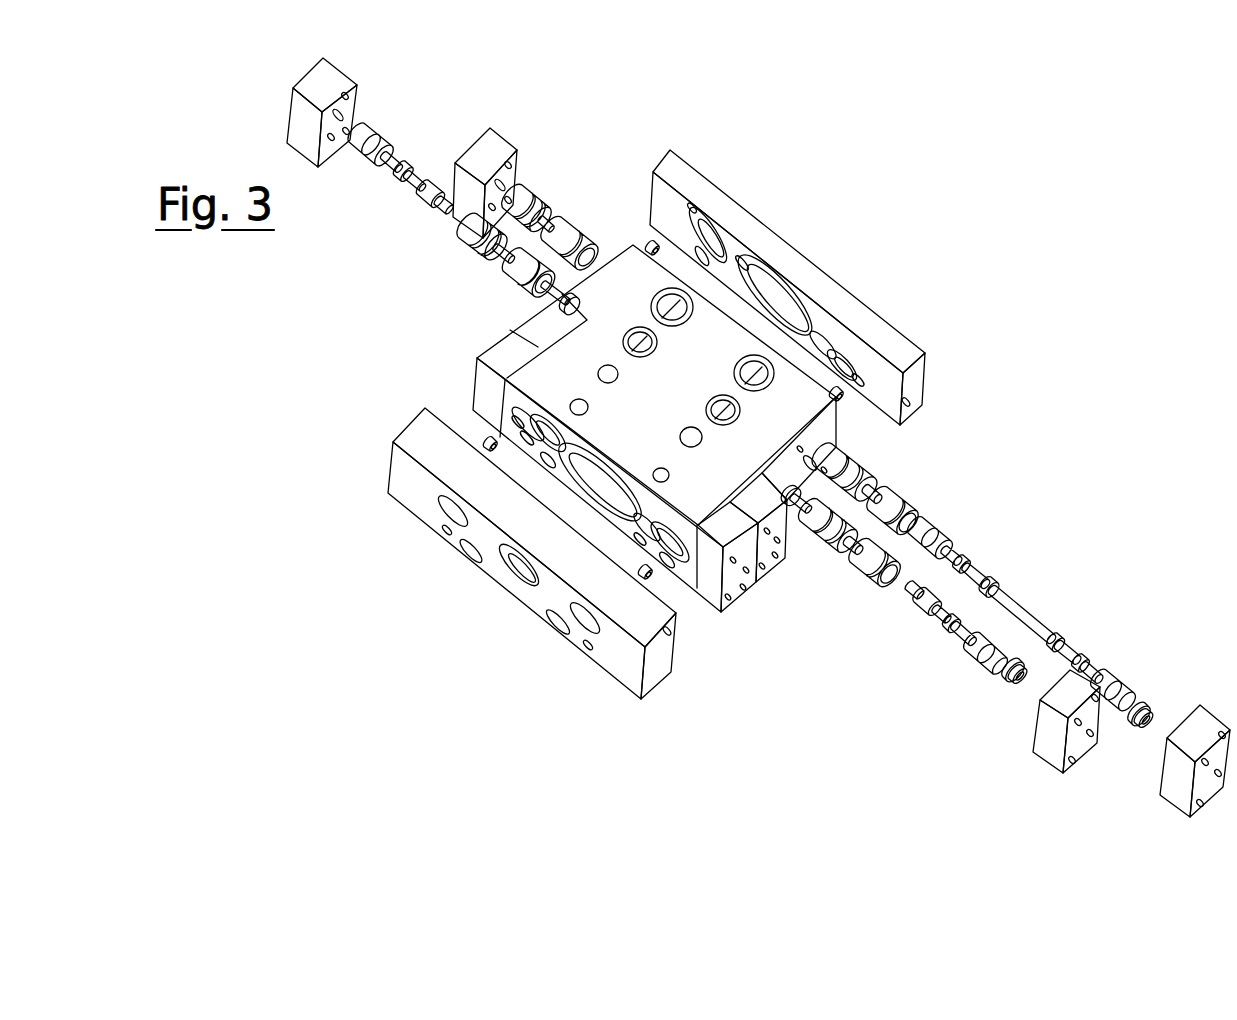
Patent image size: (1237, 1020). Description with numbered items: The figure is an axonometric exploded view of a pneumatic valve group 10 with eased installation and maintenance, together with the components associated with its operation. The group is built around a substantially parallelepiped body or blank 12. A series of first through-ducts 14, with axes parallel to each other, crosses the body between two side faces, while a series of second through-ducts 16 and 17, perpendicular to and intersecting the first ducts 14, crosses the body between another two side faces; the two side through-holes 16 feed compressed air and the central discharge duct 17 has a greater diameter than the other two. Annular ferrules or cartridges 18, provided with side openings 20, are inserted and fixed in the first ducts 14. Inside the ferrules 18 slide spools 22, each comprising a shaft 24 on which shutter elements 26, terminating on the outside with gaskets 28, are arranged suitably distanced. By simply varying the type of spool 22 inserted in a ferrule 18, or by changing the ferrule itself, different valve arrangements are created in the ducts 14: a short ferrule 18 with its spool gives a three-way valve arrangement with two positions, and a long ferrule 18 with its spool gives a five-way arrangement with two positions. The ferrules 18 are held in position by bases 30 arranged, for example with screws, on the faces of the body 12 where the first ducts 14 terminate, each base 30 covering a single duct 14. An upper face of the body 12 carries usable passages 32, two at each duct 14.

The pneumatic valve group 10 is at (767, 678).
The body 12 is at (767, 407).
The first through-ducts 14 is at (807, 447).
The second through-ducts 16 is at (523, 415).
The central discharge duct 17 is at (578, 467).
The ferrules 18 is at (540, 200).
The side openings 20 is at (557, 223).
The spools 22 is at (388, 178).
The shaft 24 is at (395, 160).
The shutter elements 26 is at (423, 178).
The gaskets 28 is at (413, 183).
The bases 30 is at (1053, 748).
The usable passages 32 is at (722, 393).